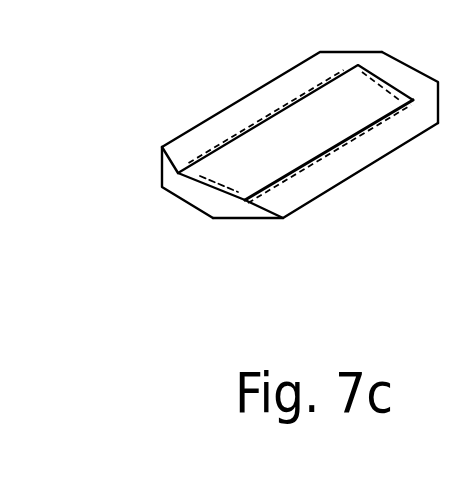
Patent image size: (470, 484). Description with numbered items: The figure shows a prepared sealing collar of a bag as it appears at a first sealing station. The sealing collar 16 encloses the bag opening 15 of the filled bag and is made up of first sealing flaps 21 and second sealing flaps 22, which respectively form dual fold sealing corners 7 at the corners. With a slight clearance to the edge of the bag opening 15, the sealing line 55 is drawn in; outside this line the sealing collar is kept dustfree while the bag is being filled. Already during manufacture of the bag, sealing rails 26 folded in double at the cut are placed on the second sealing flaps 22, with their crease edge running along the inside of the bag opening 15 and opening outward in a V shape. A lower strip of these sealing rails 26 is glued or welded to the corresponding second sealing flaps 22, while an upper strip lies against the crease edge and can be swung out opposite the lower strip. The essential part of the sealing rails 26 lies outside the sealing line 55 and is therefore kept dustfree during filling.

The dual fold sealing corner 7 is at (247, 205).
The bag opening 15 is at (312, 148).
The sealing collar 16 is at (318, 195).
The first sealing flaps 21 is at (385, 135).
The second sealing flaps 22 is at (162, 187).
The sealing rails 26 is at (209, 189).
The sealing line 55 is at (268, 117).